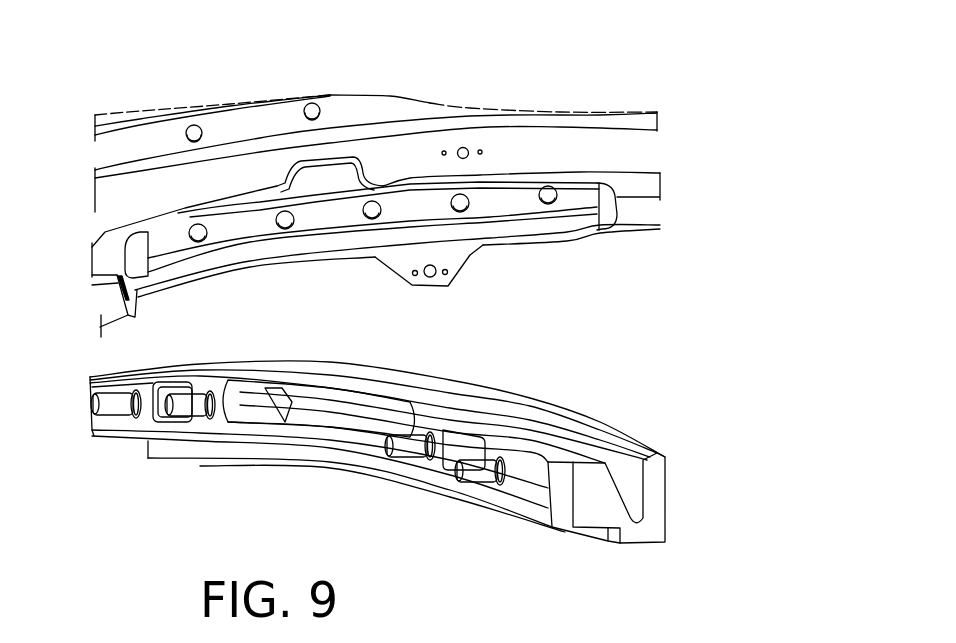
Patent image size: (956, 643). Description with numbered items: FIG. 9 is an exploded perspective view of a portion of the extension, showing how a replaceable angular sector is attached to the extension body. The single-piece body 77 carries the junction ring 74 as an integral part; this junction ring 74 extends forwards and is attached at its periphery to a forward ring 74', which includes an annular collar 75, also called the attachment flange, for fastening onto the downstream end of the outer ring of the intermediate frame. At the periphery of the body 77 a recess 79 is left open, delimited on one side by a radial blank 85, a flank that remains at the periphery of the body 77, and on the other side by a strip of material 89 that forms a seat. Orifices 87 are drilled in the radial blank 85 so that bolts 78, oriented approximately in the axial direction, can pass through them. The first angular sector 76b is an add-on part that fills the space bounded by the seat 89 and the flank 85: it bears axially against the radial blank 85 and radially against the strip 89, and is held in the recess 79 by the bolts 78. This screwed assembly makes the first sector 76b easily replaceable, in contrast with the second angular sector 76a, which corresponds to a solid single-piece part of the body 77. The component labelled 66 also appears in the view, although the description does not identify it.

The bumper beam 66 is at (100, 249).
The junction ring 74 is at (377, 134).
The forward ring 74' is at (376, 114).
The annular collar 75 is at (213, 130).
The second angular sector 76a is at (106, 300).
The first angular sector 76b is at (489, 513).
The single-piece body 77 is at (99, 104).
The bolts 78 is at (117, 415).
The recess 79 is at (318, 248).
The radial blank 85 is at (323, 220).
The orifices 87 is at (284, 230).
The strip of material 89 is at (525, 230).